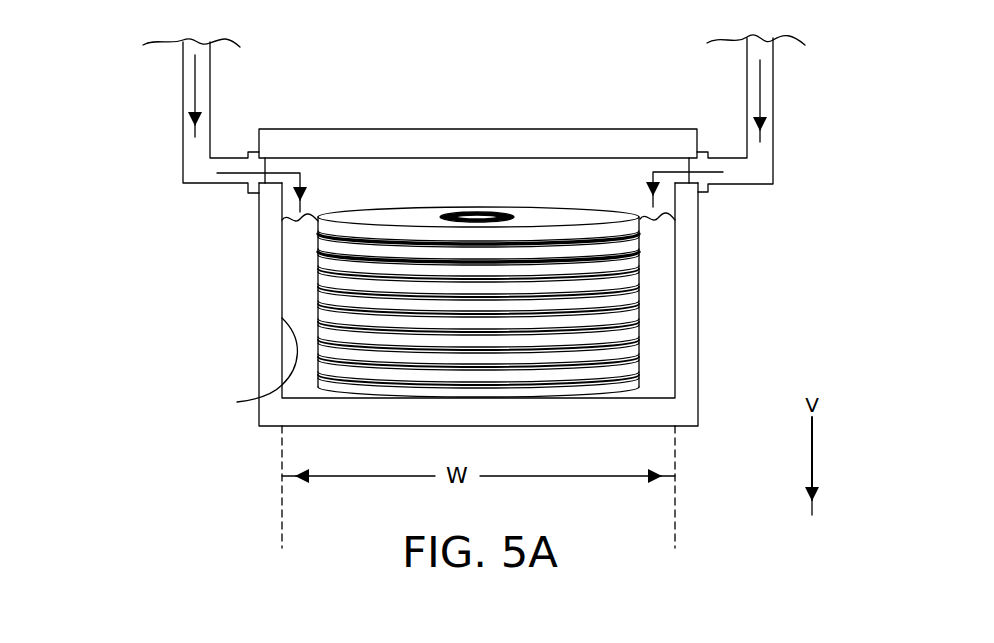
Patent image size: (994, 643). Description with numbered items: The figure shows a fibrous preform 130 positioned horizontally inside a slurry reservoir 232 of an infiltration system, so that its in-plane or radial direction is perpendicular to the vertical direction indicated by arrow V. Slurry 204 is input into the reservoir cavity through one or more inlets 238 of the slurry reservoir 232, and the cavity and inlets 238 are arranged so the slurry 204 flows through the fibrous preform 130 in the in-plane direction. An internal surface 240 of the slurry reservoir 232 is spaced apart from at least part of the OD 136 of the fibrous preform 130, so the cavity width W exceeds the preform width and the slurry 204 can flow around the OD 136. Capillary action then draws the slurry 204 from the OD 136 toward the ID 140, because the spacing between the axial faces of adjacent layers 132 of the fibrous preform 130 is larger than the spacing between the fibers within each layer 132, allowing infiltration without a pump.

The fibrous preform 130 is at (360, 213).
The layers 132 is at (323, 242).
The OD 136 is at (640, 345).
The ID 140 is at (490, 215).
The slurry 204 is at (193, 85).
The slurry reservoir 232 is at (686, 313).
The inlets 238 is at (273, 155).
The internal surface 240 is at (248, 366).